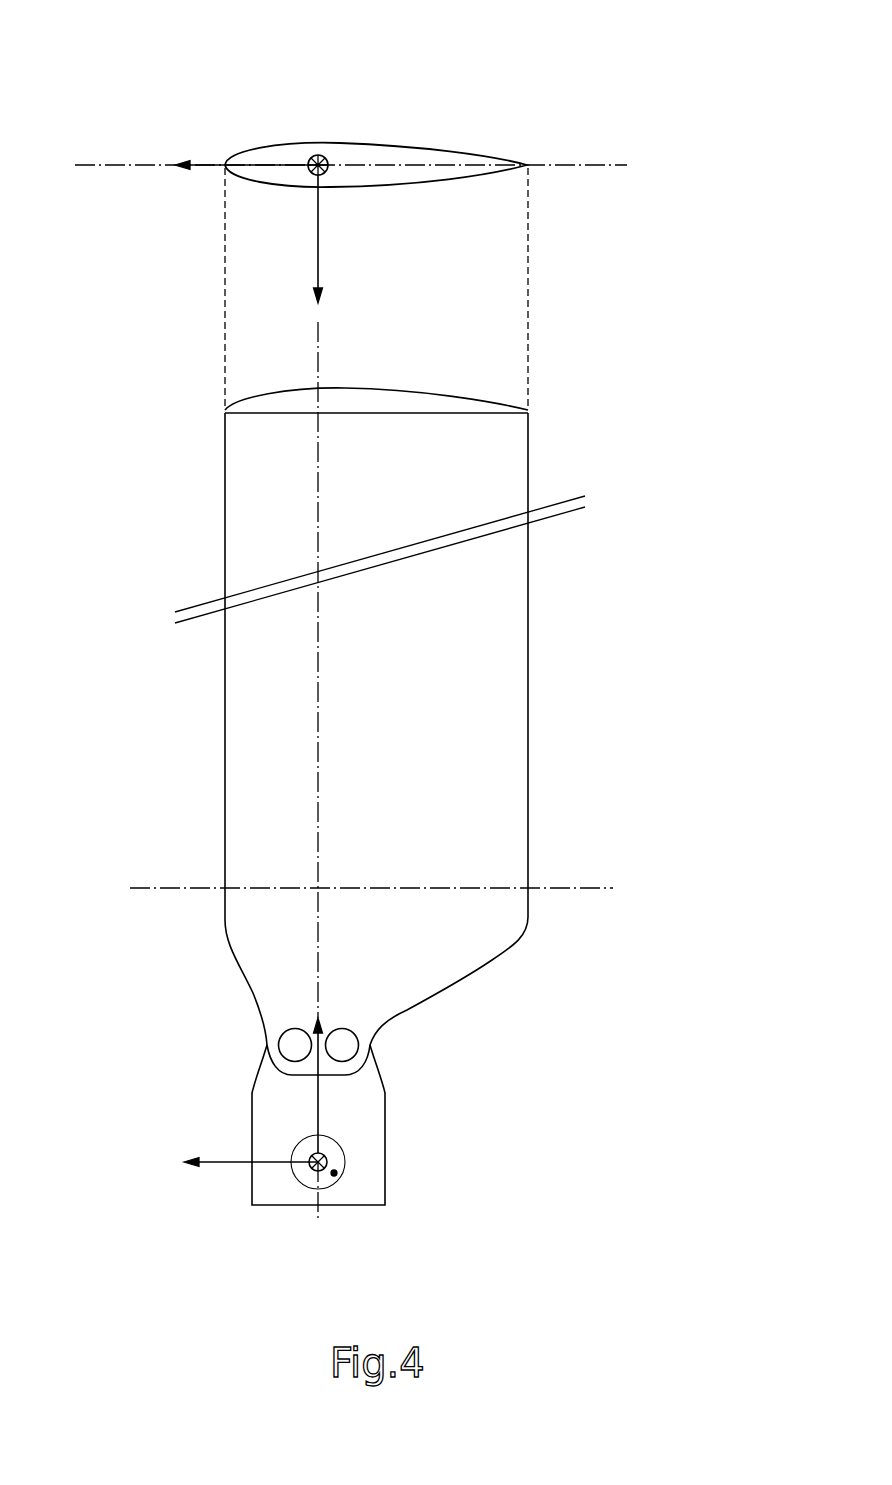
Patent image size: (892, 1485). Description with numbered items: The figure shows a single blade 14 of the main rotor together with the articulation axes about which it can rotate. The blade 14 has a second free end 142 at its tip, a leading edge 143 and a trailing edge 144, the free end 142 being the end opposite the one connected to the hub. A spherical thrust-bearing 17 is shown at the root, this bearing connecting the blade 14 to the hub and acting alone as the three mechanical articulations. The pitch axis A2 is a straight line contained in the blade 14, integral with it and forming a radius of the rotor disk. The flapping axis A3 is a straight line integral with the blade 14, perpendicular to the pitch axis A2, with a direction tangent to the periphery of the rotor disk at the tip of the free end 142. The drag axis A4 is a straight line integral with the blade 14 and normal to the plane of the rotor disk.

The blade 14 is at (367, 153).
The second free end 142 is at (432, 403).
The leading edge 143 is at (225, 693).
The trailing edge 144 is at (528, 670).
The spherical thrust-bearing 17 is at (338, 1177).
The pitch axis A2 is at (318, 143).
The flapping axis A3 is at (225, 165).
The drag axis A4 is at (318, 222).